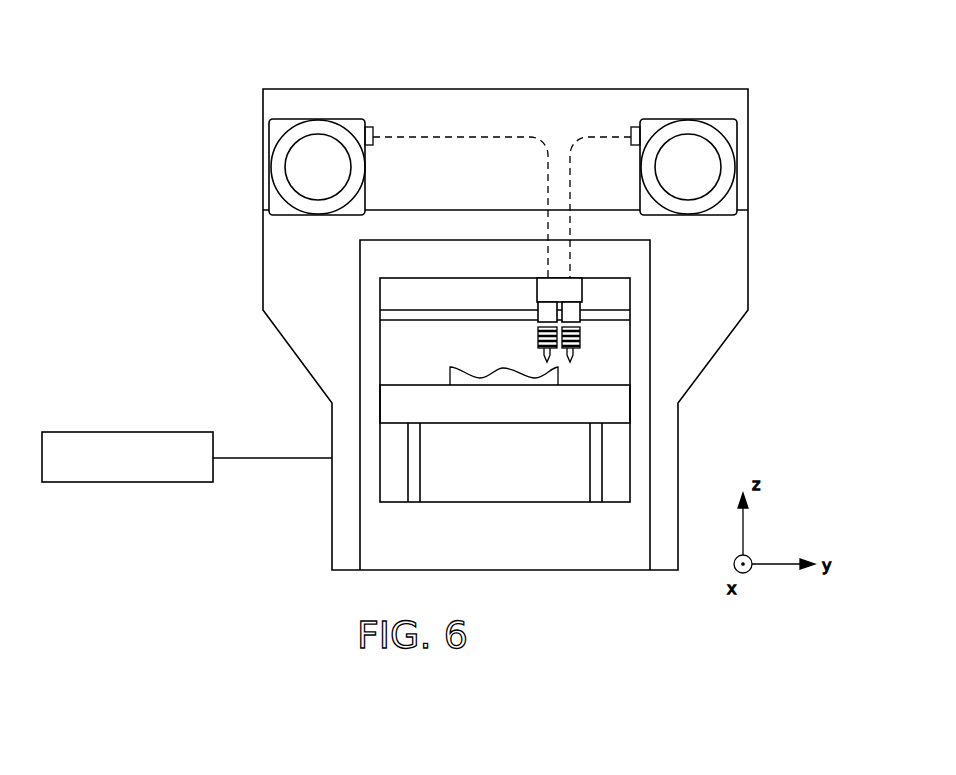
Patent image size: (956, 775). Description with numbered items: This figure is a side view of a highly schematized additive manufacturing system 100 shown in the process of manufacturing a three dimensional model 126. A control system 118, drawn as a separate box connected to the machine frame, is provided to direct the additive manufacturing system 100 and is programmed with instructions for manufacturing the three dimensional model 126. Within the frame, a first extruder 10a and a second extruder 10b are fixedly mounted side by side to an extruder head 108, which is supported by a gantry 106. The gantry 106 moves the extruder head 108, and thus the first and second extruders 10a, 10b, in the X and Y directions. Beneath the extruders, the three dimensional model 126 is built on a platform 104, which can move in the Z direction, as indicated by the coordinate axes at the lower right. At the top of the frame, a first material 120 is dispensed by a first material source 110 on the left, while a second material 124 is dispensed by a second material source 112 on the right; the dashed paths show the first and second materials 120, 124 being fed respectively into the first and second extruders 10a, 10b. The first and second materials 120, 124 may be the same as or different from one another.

The additive manufacturing system 100 is at (747, 43).
The first material source 110 is at (318, 146).
The second material source 112 is at (693, 147).
The first material 120 is at (415, 132).
The second material 124 is at (597, 133).
The gantry 106 is at (425, 313).
The extruder head 108 is at (582, 290).
The first extruder 10a is at (538, 338).
The second extruder 10b is at (580, 336).
The platform 104 is at (495, 412).
The three dimensional model 126 is at (450, 383).
The control system 118 is at (136, 447).